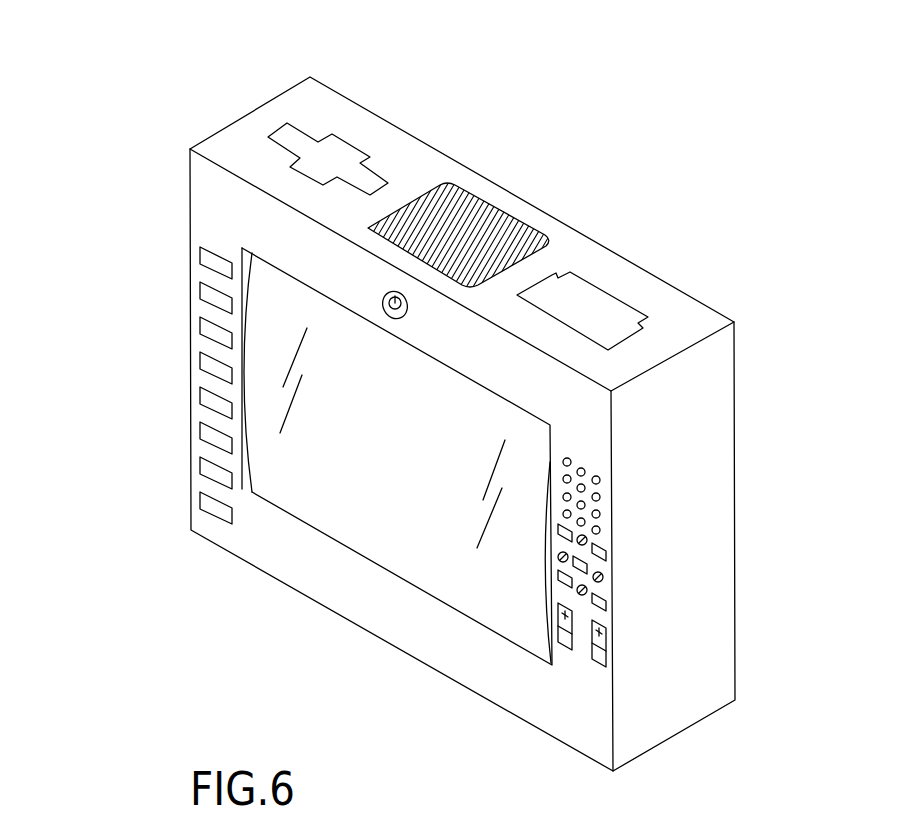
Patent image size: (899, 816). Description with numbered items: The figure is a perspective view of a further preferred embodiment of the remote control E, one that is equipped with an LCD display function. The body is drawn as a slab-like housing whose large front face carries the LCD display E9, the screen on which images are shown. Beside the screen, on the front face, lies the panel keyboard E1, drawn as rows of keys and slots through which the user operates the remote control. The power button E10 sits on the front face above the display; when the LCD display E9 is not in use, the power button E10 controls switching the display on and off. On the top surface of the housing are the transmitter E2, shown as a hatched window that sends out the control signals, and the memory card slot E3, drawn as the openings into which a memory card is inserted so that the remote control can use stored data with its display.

The electronic apparatus E is at (272, 97).
The panel keyboard E1 is at (210, 332).
The transmitter E2 is at (468, 238).
The memory card slot E3 is at (330, 157).
The LCD display E9 is at (350, 410).
The power button E10 is at (382, 297).